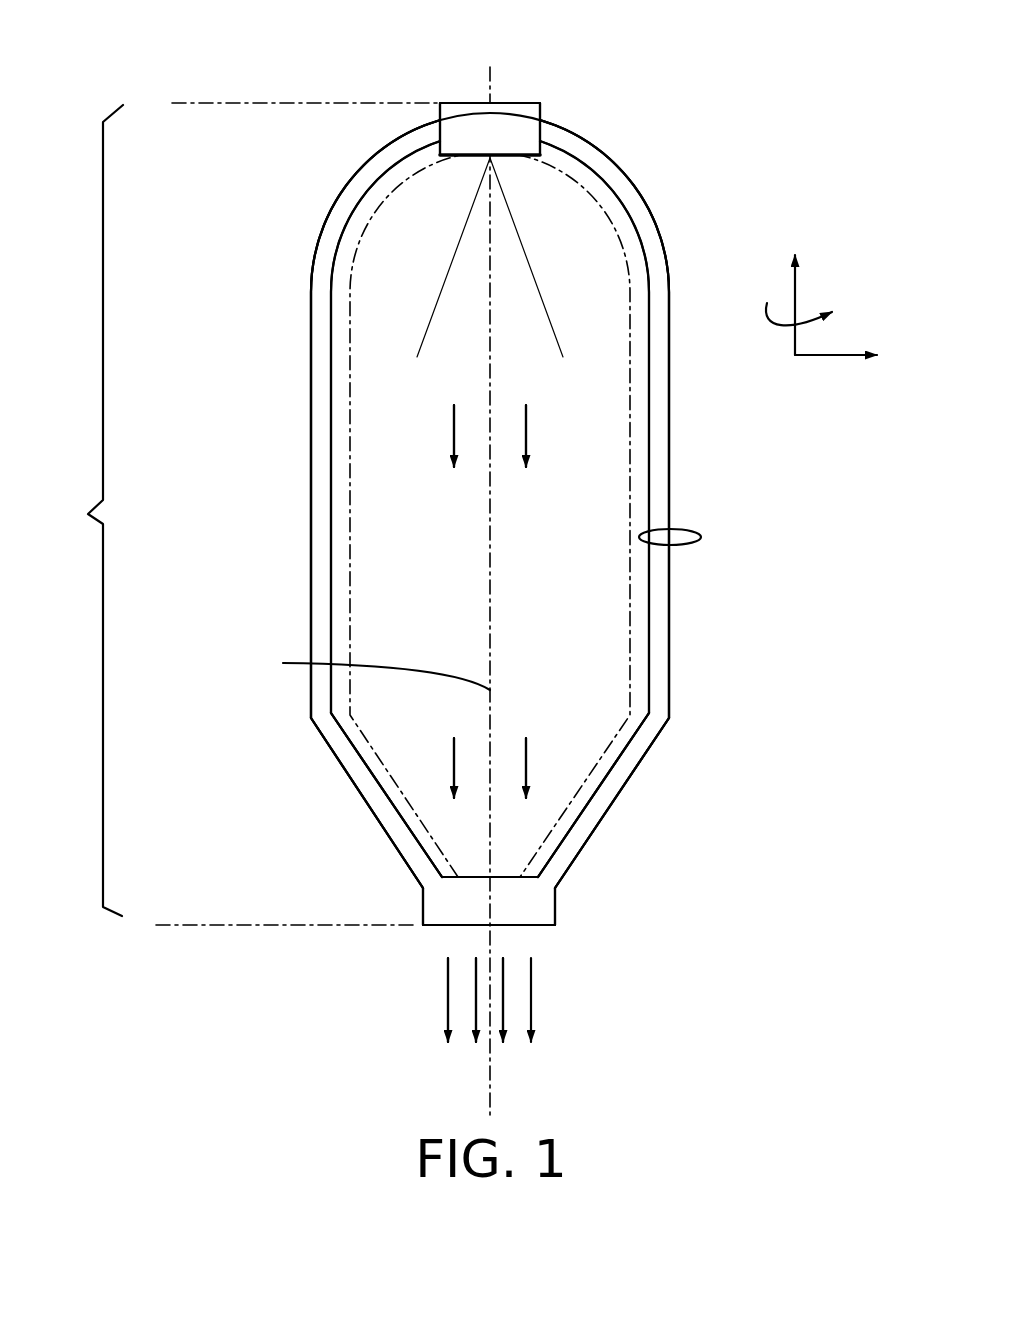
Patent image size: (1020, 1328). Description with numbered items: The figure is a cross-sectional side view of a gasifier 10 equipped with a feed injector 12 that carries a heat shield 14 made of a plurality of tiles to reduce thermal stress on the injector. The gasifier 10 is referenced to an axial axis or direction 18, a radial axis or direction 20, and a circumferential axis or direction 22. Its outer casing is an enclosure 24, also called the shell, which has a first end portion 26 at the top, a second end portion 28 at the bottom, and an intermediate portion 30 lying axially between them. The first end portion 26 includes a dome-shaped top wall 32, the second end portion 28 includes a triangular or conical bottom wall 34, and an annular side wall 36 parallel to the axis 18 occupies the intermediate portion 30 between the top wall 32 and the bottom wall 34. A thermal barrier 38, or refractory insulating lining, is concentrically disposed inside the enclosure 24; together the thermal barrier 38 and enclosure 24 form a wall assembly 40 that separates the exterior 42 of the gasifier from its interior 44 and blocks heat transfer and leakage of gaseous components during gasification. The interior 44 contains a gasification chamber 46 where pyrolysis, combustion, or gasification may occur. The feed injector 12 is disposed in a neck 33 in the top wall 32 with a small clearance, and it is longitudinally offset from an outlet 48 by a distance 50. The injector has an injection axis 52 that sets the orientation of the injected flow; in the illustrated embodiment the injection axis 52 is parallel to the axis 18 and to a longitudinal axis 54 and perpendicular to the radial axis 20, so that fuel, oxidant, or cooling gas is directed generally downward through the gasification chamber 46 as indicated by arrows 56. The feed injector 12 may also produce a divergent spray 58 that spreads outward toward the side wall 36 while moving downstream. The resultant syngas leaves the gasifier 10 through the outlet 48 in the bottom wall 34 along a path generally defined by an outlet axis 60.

The gasifier 10 is at (517, 43).
The feed injector 12 is at (530, 100).
The heat shield 14 is at (548, 128).
The axial axis or direction 18 is at (798, 288).
The radial axis or direction 20 is at (837, 357).
The circumferential axis or direction 22 is at (782, 328).
The enclosure 24 is at (680, 282).
The first end portion 26 is at (327, 178).
The second end portion 28 is at (313, 801).
The intermediate portion 30 is at (288, 485).
The top wall 32 is at (387, 160).
The neck 33 is at (438, 148).
The bottom wall 34 is at (390, 823).
The side wall 36 is at (317, 457).
The thermal barrier 38 is at (342, 338).
The wall assembly 40 is at (687, 528).
The exterior 42 is at (762, 677).
The interior 44 is at (538, 687).
The gasification chamber 46 is at (578, 388).
The outlet 48 is at (540, 928).
The distance 50 is at (246, 514).
The injection axis 52 is at (365, 670).
The longitudinal axis 54 is at (488, 215).
The arrows 56 is at (454, 432).
The divergent spray 58 is at (437, 292).
The outlet axis 60 is at (490, 903).